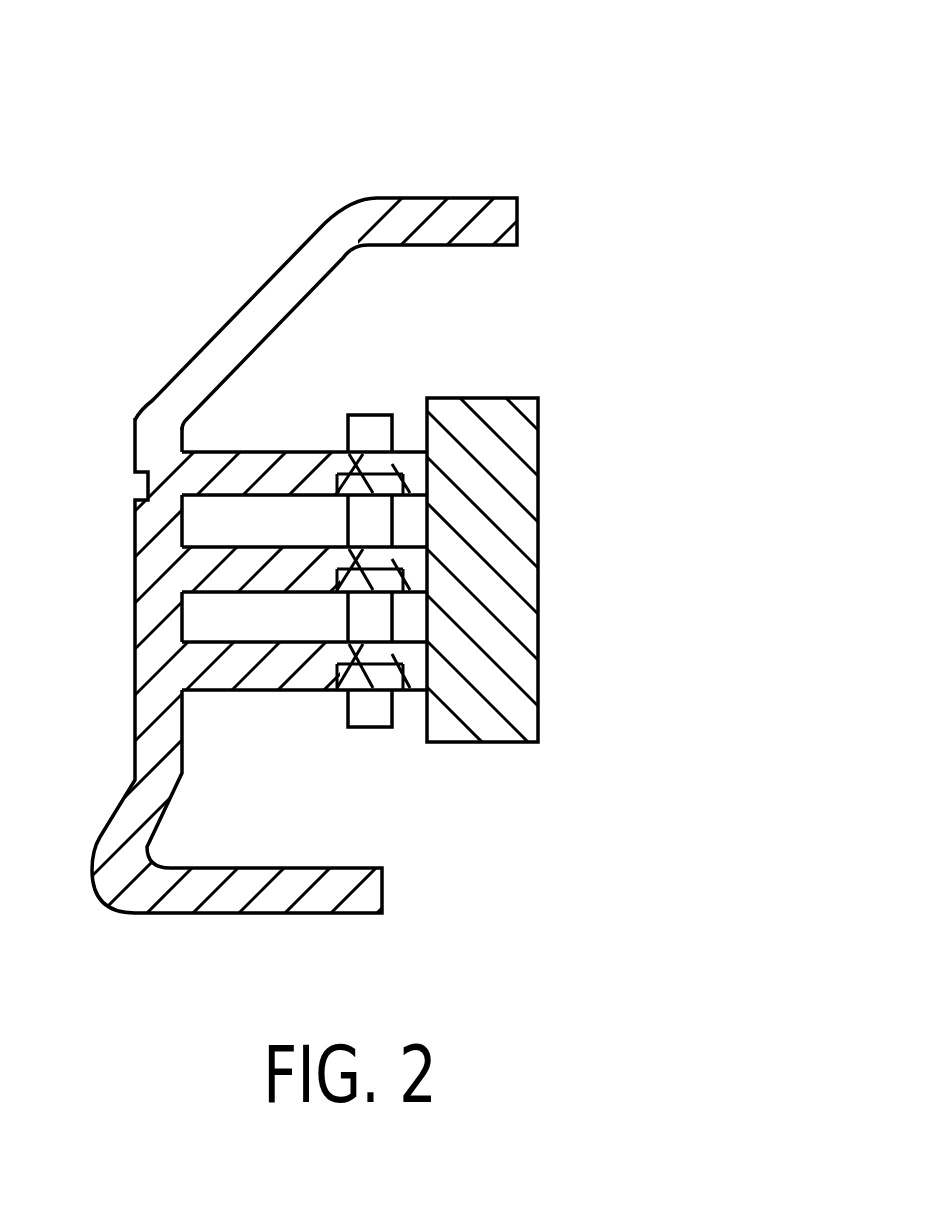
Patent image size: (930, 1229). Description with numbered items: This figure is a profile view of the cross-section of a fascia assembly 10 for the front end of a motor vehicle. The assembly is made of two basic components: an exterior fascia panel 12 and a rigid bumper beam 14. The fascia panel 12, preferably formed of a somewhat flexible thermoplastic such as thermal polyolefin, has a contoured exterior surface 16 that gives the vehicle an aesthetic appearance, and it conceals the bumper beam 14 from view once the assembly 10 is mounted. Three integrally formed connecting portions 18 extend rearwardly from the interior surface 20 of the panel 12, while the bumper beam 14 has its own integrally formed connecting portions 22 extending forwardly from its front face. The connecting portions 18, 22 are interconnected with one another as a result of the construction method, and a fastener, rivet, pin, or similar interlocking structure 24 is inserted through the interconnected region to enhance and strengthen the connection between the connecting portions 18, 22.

The fascia assembly 10 is at (700, 119).
The exterior fascia panel 12 is at (273, 327).
The bumper beam 14 is at (515, 476).
The contoured exterior surface 16 is at (183, 370).
The connecting portions 18 is at (347, 693).
The interior surface 20 is at (300, 343).
The connecting portions 22 is at (363, 650).
The interlocking structure 24 is at (372, 427).